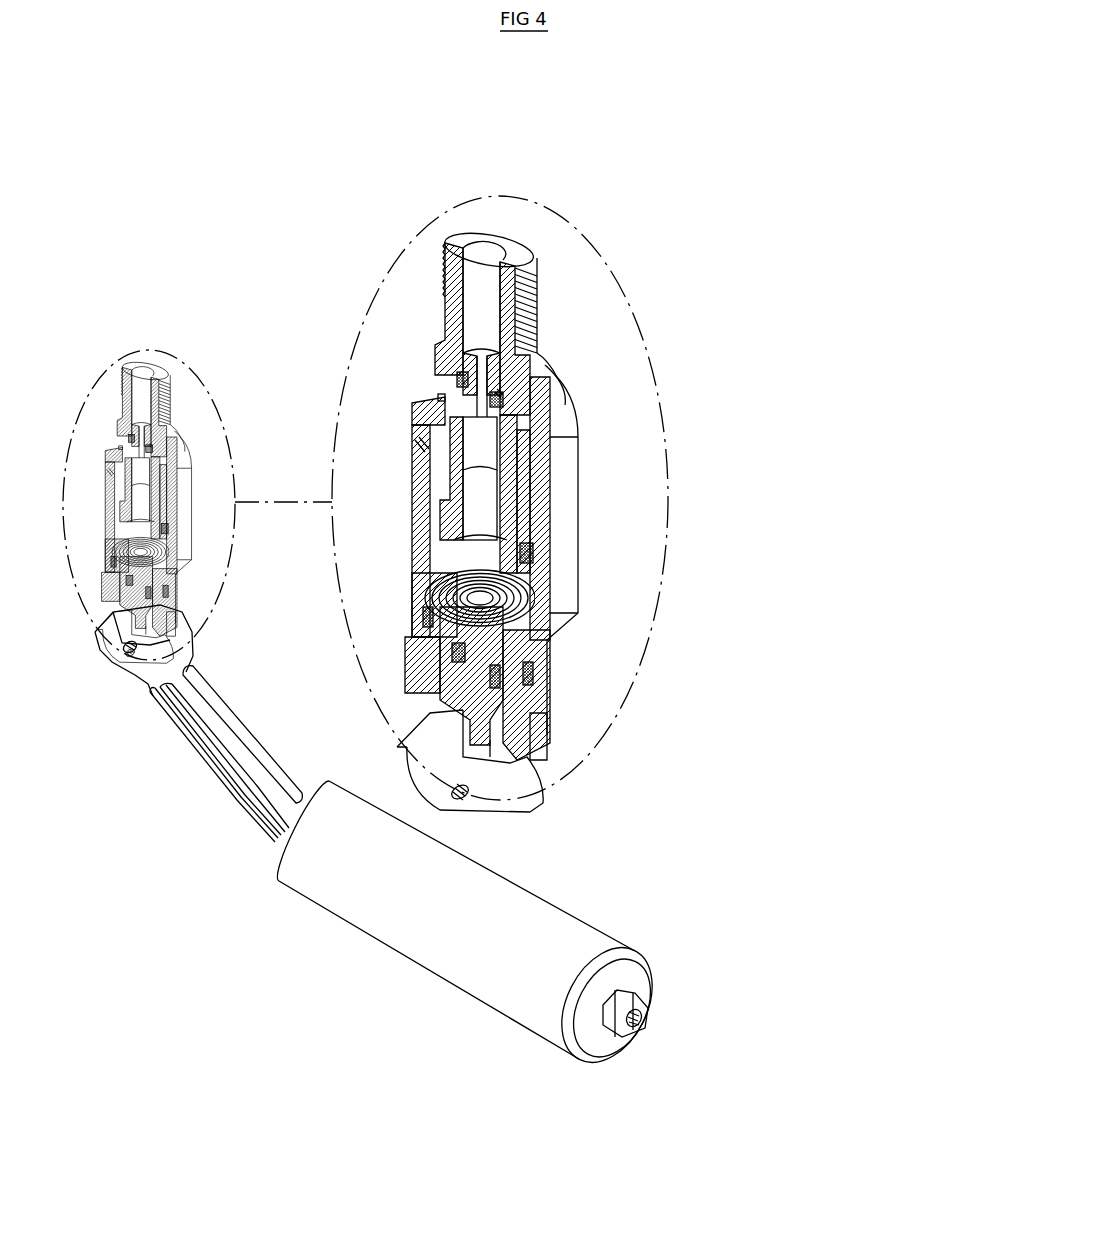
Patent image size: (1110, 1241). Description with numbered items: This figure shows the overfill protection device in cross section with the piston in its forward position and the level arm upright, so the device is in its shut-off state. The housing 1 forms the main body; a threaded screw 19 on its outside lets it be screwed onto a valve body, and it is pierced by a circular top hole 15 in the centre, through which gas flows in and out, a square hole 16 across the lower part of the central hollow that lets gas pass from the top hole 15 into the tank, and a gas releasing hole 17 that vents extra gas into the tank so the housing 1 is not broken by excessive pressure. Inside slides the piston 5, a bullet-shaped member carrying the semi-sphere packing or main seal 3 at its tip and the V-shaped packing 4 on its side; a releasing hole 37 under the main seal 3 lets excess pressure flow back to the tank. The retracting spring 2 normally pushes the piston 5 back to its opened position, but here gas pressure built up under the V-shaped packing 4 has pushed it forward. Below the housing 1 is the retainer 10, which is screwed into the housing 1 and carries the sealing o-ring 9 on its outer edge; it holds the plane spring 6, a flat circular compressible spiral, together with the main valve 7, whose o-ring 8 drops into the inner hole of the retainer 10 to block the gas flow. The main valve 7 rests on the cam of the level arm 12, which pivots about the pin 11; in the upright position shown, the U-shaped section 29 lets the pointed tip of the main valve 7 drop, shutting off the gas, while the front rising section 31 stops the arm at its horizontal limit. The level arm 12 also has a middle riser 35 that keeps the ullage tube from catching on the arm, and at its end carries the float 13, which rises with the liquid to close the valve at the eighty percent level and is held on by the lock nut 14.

The housing 1 is at (548, 363).
The spring 2 is at (545, 507).
The semi-sphere packing or main seal 3 is at (503, 408).
The V-shaped packing 4 is at (534, 555).
The piston 5 is at (507, 430).
The plane spring 6 is at (545, 633).
The main valve 7 is at (537, 710).
The o-ring 8 is at (512, 680).
The o-ring 9 is at (558, 667).
The retainer 10 is at (432, 667).
The pin 11 is at (477, 783).
The level arm 12 is at (237, 795).
The float 13 is at (334, 915).
The lock nut 14 is at (650, 1007).
The top hole 15 is at (478, 268).
The square hole 16 is at (440, 396).
The gas releasing hole 17 is at (419, 445).
The threaded screw 19 is at (542, 308).
The U-shaped section 29 is at (495, 757).
The front rising section 31 is at (549, 752).
The middle riser 35 is at (228, 724).
The releasing hole 37 is at (499, 394).